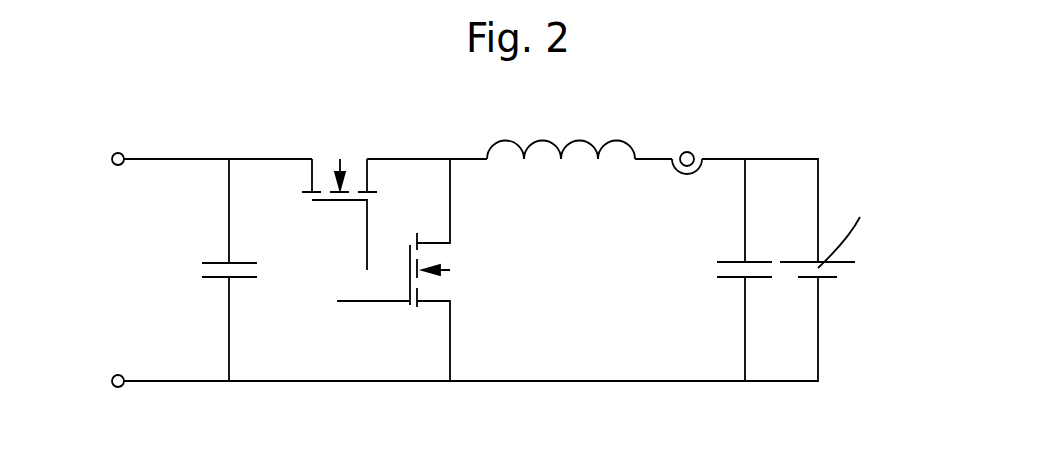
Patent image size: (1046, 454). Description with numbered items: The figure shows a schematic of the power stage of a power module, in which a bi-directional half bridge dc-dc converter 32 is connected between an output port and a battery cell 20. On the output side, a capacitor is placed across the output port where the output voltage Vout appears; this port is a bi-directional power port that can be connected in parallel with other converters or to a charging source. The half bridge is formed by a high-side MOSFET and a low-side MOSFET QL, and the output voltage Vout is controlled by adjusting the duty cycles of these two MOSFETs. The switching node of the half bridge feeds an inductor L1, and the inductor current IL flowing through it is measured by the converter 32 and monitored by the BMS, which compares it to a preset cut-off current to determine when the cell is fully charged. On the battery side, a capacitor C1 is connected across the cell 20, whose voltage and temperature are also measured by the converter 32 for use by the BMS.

The DC-DC converter 32 is at (310, 135).
The cell 20 is at (845, 322).
The MOSFET Q_L QL is at (413, 270).
The inductor L1 is at (561, 129).
The capacitor C1 is at (727, 270).
The output voltage Vout is at (199, 270).
The inductor current IL is at (687, 152).